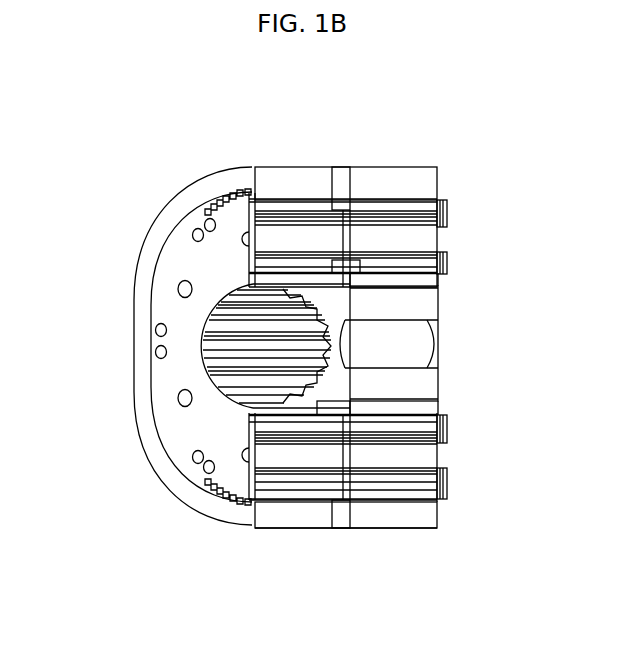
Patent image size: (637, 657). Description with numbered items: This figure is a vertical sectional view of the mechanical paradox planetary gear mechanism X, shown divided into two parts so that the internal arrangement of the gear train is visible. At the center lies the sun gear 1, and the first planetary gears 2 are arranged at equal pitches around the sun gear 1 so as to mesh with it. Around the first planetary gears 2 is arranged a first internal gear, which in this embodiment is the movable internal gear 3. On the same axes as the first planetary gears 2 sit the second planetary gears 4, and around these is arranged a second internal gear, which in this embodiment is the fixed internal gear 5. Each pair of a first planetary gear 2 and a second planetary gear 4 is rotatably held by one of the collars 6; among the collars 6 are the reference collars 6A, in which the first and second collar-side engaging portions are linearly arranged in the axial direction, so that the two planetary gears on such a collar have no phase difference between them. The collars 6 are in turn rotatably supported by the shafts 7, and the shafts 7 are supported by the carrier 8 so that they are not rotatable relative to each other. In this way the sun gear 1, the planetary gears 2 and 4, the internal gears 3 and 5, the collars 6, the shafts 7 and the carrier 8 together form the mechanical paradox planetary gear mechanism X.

The sun gear 1 is at (440, 301).
The first planetary gears 2 is at (405, 198).
The movable internal gear 3 is at (393, 529).
The second planetary gears 4 is at (283, 212).
The fixed internal gear 5 is at (297, 529).
The collars 6 is at (338, 344).
The reference collars 6A is at (334, 210).
The shafts 7 is at (178, 286).
The carrier 8 is at (447, 470).
The mechanical paradox planetary gear mechanism X is at (228, 152).